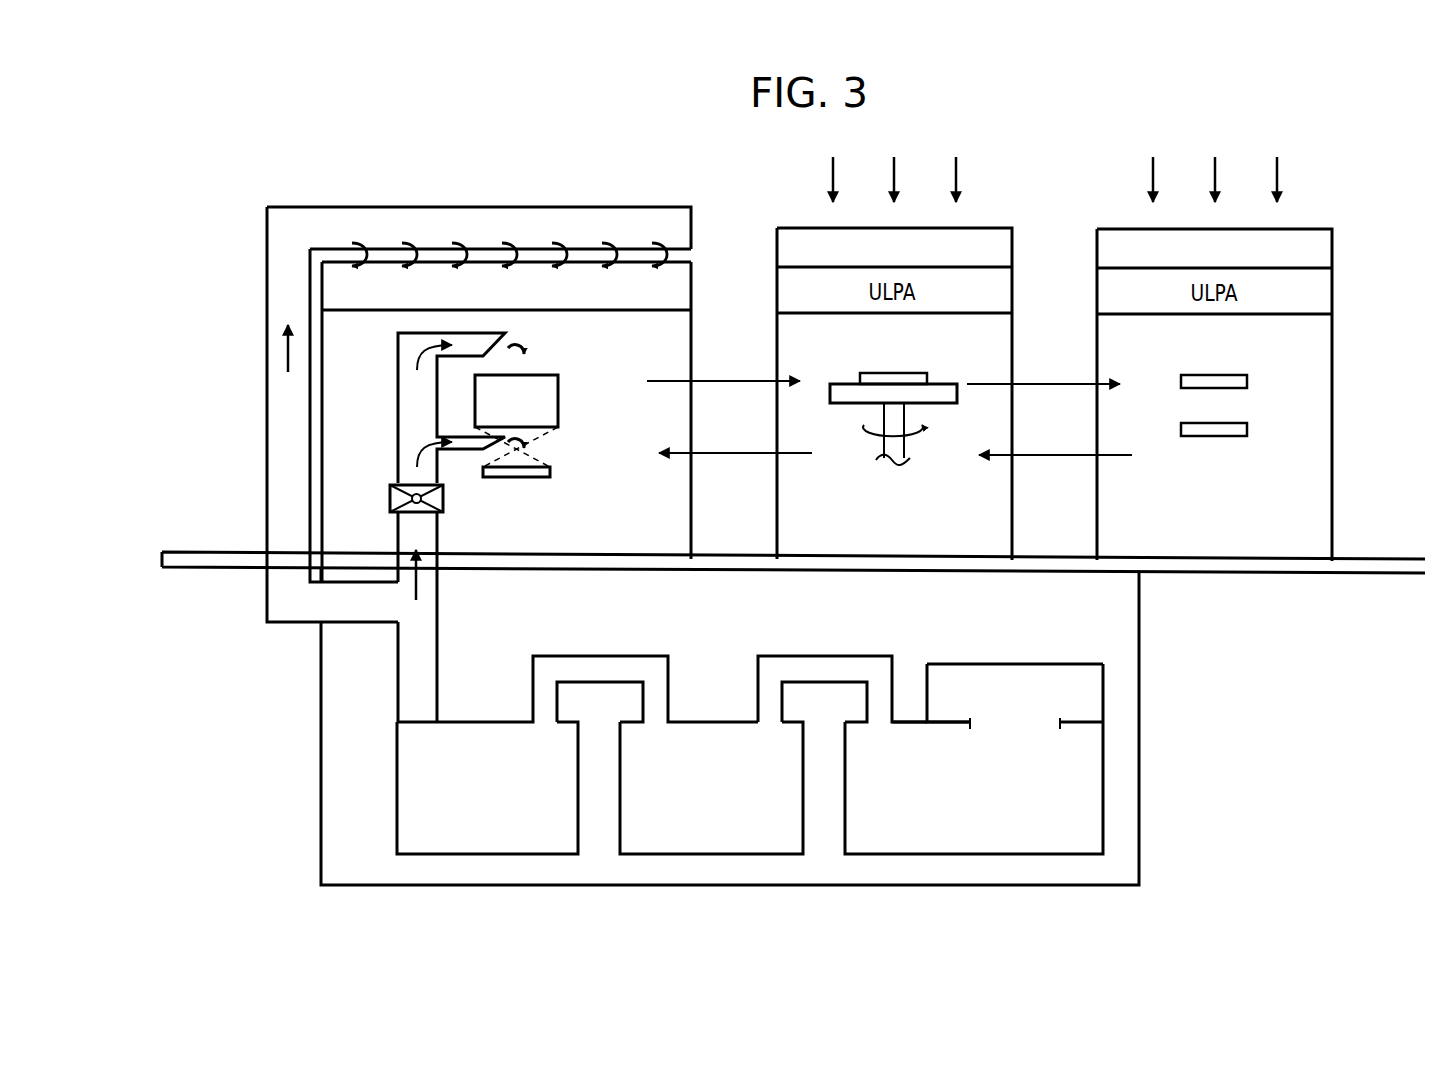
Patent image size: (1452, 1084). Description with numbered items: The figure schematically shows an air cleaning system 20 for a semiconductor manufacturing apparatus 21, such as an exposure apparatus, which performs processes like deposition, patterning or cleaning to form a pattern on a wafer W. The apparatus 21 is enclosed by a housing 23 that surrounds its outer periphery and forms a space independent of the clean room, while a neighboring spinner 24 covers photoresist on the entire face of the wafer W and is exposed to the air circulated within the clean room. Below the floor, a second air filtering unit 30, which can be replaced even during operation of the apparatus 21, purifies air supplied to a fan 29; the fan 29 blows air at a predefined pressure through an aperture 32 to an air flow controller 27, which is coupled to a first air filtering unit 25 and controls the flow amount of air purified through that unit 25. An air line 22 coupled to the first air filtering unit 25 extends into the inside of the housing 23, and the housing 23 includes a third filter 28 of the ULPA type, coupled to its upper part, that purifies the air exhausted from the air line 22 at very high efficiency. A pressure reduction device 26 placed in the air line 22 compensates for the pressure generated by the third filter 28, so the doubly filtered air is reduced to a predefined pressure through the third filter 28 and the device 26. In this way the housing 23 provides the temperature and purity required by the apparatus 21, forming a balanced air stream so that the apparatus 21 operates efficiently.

The air cleaning system 20 is at (1172, 645).
The semiconductor manufacturing apparatus 21 is at (588, 405).
The air line 22 is at (411, 406).
The housing 23 is at (691, 347).
The spinner 24 is at (940, 392).
The first air filtering unit 25 is at (397, 785).
The pressure reduction device 26 is at (392, 497).
The air flow controller 27 is at (712, 722).
The third filter 28 is at (338, 288).
The fan 29 is at (1105, 813).
The second air filtering unit 30 is at (1105, 692).
The aperture 32 is at (1017, 725).
The wafer W is at (550, 472).